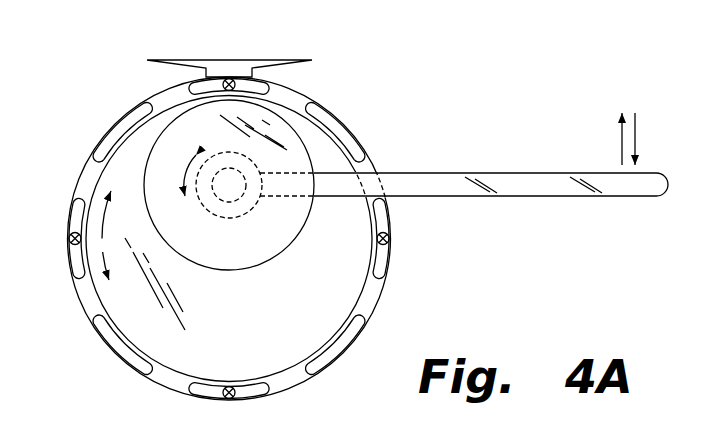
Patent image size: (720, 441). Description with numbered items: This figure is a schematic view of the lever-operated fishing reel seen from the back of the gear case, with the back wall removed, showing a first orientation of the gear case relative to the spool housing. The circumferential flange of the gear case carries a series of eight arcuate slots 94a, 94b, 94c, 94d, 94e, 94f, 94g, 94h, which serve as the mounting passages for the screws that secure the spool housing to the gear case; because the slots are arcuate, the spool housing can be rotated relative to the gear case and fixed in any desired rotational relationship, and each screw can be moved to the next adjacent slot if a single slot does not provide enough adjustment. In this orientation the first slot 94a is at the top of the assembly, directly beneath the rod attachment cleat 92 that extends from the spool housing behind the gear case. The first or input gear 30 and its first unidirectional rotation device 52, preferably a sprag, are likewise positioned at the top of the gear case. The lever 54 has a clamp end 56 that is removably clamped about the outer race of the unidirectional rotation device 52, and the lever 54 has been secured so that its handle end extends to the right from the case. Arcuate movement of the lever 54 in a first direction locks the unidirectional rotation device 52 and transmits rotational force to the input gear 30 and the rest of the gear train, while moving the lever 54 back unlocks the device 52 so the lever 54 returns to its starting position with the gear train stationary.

The first or input gear 30 is at (232, 270).
The first unidirectional rotation device 52 is at (206, 210).
The lever 54 is at (517, 172).
The clamp end 56 is at (246, 214).
The rod attachment cleat 92 is at (238, 60).
The first arcuate slot 94a is at (191, 80).
The arcuate slot 94b is at (361, 152).
The arcuate slot 94c is at (389, 262).
The arcuate slot 94d is at (373, 321).
The arcuate slot 94e is at (269, 397).
The arcuate slot 94f is at (150, 378).
The arcuate slot 94g is at (75, 283).
The arcuate slot 94h is at (84, 158).